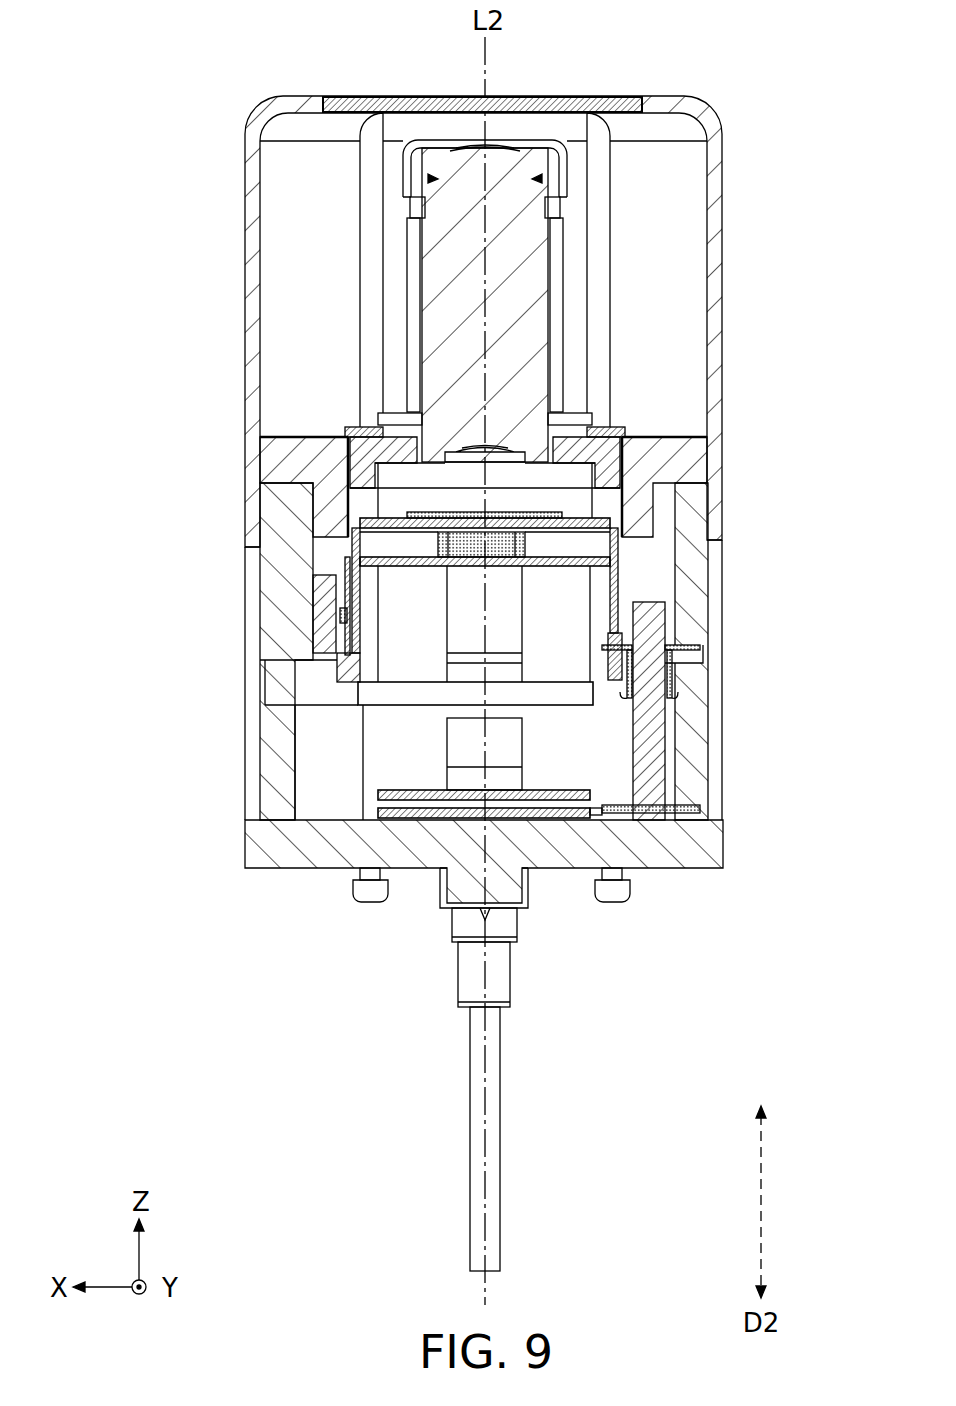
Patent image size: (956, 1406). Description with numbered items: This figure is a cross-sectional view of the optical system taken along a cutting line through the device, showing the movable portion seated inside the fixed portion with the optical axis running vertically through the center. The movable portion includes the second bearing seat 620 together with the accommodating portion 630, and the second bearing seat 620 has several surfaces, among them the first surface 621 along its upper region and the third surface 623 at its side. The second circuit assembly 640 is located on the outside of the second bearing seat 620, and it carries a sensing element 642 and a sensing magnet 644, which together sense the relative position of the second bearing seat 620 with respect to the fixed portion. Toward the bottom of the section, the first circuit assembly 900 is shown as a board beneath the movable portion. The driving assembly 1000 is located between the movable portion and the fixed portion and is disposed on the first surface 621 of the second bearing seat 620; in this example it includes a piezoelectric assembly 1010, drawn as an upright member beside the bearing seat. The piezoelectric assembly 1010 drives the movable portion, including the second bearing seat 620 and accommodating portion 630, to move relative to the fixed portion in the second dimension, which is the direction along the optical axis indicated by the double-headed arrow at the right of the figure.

The second bearing seat 620 is at (336, 678).
The first surface 621 is at (618, 548).
The third surface 623 is at (602, 685).
The accommodating portion 630 is at (425, 658).
The second circuit assembly 640 is at (312, 575).
The sensing element 642 is at (346, 618).
The sensing magnet 644 is at (340, 612).
The first circuit assembly 900 is at (378, 794).
The driving assembly 1000 is at (668, 610).
The piezoelectric assembly 1010 is at (655, 632).